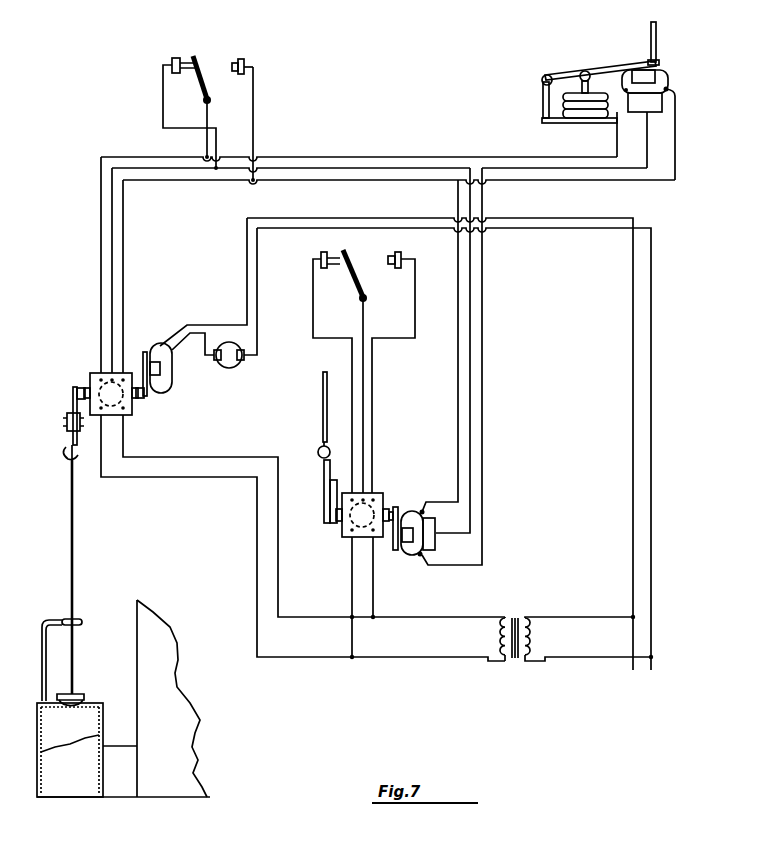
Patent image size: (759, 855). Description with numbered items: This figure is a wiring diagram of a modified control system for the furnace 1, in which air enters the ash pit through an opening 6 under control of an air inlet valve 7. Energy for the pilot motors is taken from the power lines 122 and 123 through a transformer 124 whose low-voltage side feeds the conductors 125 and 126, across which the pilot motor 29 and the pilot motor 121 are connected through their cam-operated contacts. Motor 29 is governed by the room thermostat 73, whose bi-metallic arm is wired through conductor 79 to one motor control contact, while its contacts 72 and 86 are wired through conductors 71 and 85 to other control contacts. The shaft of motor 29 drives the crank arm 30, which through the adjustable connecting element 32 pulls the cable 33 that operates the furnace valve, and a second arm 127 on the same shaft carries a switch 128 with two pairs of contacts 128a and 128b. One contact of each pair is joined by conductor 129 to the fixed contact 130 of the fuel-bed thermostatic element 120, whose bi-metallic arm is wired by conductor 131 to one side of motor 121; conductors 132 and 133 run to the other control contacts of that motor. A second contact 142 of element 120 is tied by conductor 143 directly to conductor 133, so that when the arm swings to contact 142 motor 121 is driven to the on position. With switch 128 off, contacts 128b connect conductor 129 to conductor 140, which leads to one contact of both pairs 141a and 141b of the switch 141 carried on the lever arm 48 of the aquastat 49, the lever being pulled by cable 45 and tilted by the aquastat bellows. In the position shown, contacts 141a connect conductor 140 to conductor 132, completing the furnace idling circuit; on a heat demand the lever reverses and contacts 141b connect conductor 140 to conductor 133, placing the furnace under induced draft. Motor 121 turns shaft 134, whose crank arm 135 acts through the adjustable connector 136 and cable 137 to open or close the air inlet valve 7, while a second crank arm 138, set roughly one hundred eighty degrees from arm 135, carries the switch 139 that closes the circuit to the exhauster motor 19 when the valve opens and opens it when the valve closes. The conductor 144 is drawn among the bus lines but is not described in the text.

The furnace 1 is at (177, 700).
The opening 6 is at (80, 710).
The air inlet valve 7 is at (78, 704).
The exhauster motor 19 is at (240, 365).
The pilot motor 29 is at (340, 532).
The crank arm 30 is at (330, 500).
The adjustable connecting element 32 is at (323, 465).
The cable 33 is at (323, 404).
The cable 45 is at (660, 40).
The lever arm 48 is at (626, 68).
The aquastat 49 is at (532, 100).
The conductor 71 is at (313, 293).
The contact 72 is at (313, 259).
The thermostat 73 is at (368, 262).
The conductor 79 is at (366, 308).
The conductor 85 is at (415, 302).
The contact 86 is at (403, 256).
The thermostatic element 120 is at (215, 45).
The pilot motor 121 is at (140, 413).
The power line 122 is at (653, 558).
The power line 123 is at (633, 560).
The transformer 124 is at (520, 663).
The conductor 125 is at (455, 617).
The conductor 126 is at (425, 657).
The second arm 127 is at (398, 548).
The switch 128 is at (421, 505).
The pair of contacts 128a is at (444, 513).
The pair of contacts 128b is at (422, 556).
The conductor 129 is at (472, 352).
The fixed contact 130 is at (172, 62).
The conductor 131 is at (112, 210).
The conductor 132 is at (101, 232).
The conductor 133 is at (123, 224).
The shaft 134 is at (88, 386).
The crank arm 135 is at (73, 405).
The adjustable connector 136 is at (66, 437).
The cable 137 is at (70, 497).
The second crank arm 138 is at (152, 396).
The switch 139 is at (172, 377).
The conductor 140 is at (483, 303).
The switch 141 is at (655, 82).
The pair of contacts 141a is at (618, 96).
The pair of contacts 141b is at (668, 90).
The contact 142 is at (262, 67).
The conductor 143 is at (253, 115).
The conductor 144 is at (458, 393).